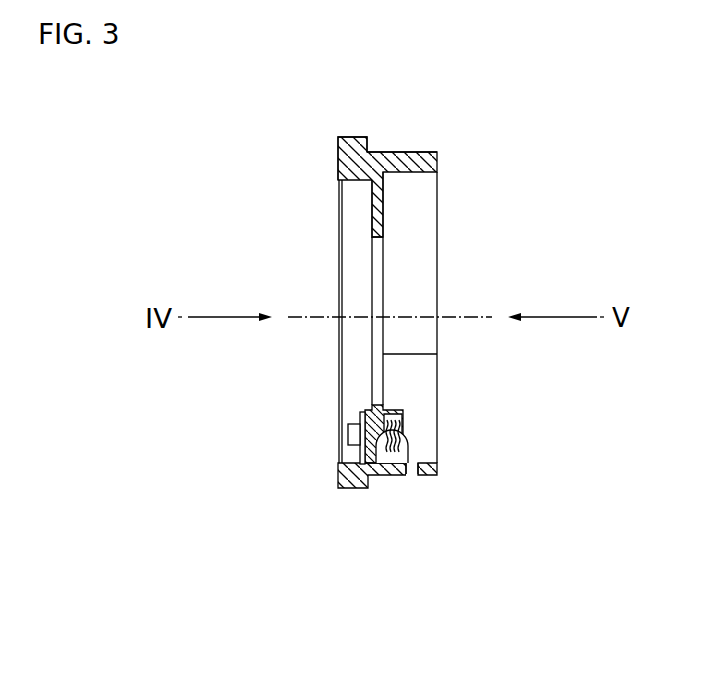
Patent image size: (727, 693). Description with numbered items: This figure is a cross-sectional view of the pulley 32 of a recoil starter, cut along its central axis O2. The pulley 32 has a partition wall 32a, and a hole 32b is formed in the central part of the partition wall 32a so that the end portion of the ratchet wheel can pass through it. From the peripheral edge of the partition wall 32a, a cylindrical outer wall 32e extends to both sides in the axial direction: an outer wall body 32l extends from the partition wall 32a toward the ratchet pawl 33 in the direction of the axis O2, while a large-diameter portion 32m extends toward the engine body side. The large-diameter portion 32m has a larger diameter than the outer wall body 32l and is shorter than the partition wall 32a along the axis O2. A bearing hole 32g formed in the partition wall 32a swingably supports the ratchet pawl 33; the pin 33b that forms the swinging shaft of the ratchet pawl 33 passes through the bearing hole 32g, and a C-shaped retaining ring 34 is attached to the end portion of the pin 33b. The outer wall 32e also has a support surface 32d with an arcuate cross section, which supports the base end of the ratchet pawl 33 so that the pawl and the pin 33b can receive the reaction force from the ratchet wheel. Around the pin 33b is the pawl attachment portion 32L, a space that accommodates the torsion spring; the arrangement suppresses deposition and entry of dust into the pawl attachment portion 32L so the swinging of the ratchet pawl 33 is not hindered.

The pulley 32 is at (426, 139).
The large-diameter portion 32m is at (350, 137).
The outer wall body 32l is at (399, 151).
The partition wall 32a is at (384, 221).
The hole 32b is at (380, 242).
The pawl attachment portion 32L is at (390, 406).
The support surface 32d is at (416, 462).
The outer wall 32e is at (425, 476).
The bearing hole 32g is at (406, 475).
The ratchet pawl 33 is at (428, 397).
The pin 33b is at (348, 432).
The C-shaped retaining ring 34 is at (361, 412).
The axis O2 is at (313, 315).